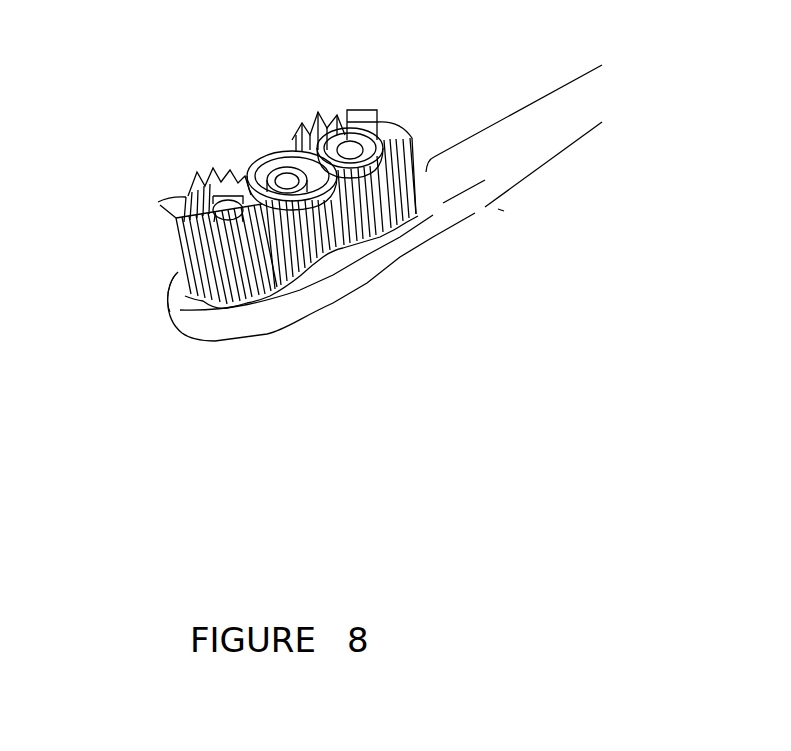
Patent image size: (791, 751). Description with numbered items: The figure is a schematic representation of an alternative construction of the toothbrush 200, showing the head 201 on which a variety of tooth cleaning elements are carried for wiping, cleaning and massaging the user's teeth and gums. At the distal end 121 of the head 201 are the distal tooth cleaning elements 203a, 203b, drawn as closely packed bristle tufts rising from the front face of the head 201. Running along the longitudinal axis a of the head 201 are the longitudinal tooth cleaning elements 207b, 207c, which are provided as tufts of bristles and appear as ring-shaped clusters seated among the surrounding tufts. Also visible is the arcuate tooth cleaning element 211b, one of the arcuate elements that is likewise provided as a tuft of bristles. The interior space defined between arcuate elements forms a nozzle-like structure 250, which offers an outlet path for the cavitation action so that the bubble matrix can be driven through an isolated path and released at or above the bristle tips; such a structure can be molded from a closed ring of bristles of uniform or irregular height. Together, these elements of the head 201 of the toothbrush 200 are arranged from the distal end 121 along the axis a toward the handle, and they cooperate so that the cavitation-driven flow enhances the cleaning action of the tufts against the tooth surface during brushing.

The toothbrush 200 is at (228, 90).
The nozzle-like structure 250 is at (208, 170).
The distal tooth cleaning element 203a is at (158, 202).
The distal tooth cleaning element 203b is at (177, 218).
The longitudinal tooth cleaning element 207b is at (285, 178).
The longitudinal tooth cleaning element 207c is at (353, 150).
The arcuate tooth cleaning element 211b is at (320, 243).
The head 201 is at (346, 302).
The distal end 121 is at (188, 332).
The longitudinal axis a is at (167, 327).